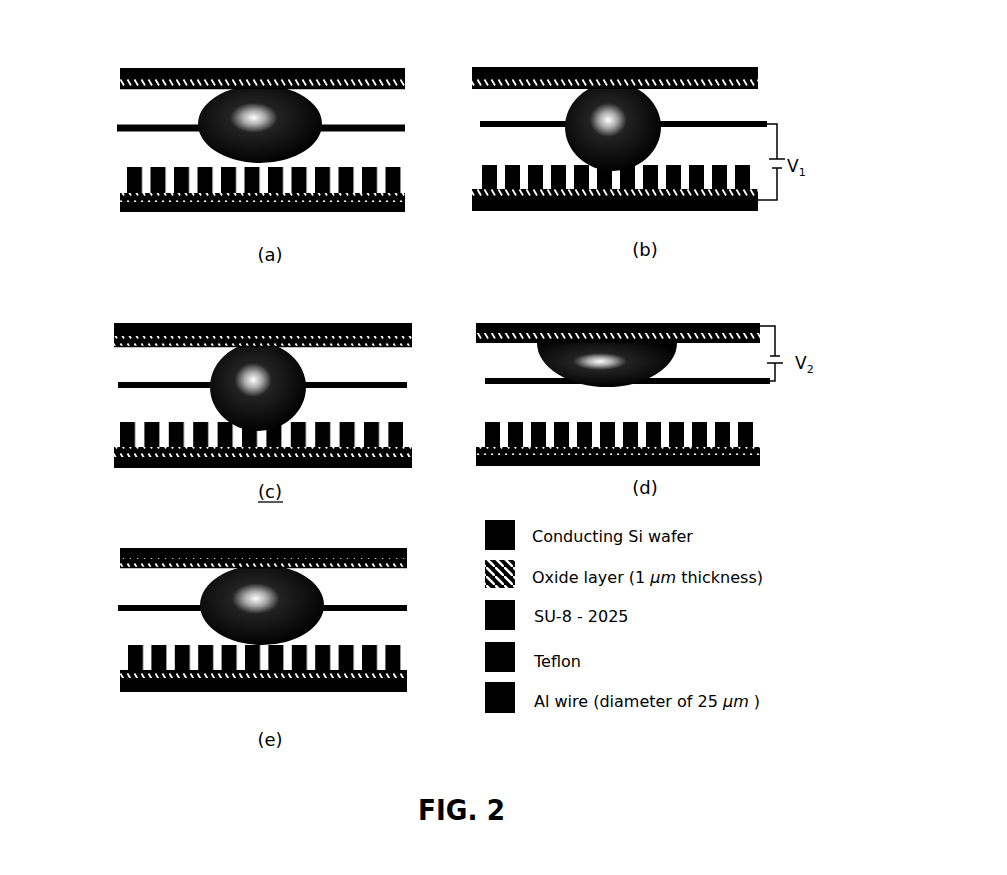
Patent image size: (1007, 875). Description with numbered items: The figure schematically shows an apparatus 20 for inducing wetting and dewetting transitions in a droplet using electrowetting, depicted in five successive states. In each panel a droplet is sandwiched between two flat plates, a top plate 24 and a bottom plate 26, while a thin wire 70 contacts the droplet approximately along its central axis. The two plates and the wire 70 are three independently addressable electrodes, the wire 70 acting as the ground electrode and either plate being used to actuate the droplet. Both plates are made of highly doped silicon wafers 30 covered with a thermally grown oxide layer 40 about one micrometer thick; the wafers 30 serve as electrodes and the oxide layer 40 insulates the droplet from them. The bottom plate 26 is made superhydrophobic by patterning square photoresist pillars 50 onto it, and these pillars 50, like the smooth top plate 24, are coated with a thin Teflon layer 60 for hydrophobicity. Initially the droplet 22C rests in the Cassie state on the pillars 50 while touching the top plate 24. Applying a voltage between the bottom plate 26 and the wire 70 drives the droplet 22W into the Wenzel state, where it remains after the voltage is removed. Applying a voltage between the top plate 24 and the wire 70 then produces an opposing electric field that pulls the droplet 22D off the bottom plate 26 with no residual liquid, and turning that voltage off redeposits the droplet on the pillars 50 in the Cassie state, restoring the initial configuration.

The apparatus 20 is at (415, 236).
The droplet in Cassie state 22C is at (257, 112).
The droplet in Wenzel state 22W is at (657, 110).
The droplet lifted off bottom plate 22D is at (663, 332).
The top plate 24 is at (140, 325).
The bottom plate 26 is at (188, 212).
The highly doped silicon wafer 30 is at (407, 65).
The oxide layer 40 is at (473, 196).
The SU-8 pillars 50 is at (750, 432).
The Teflon layer 60 is at (120, 83).
The wire 70 is at (484, 386).